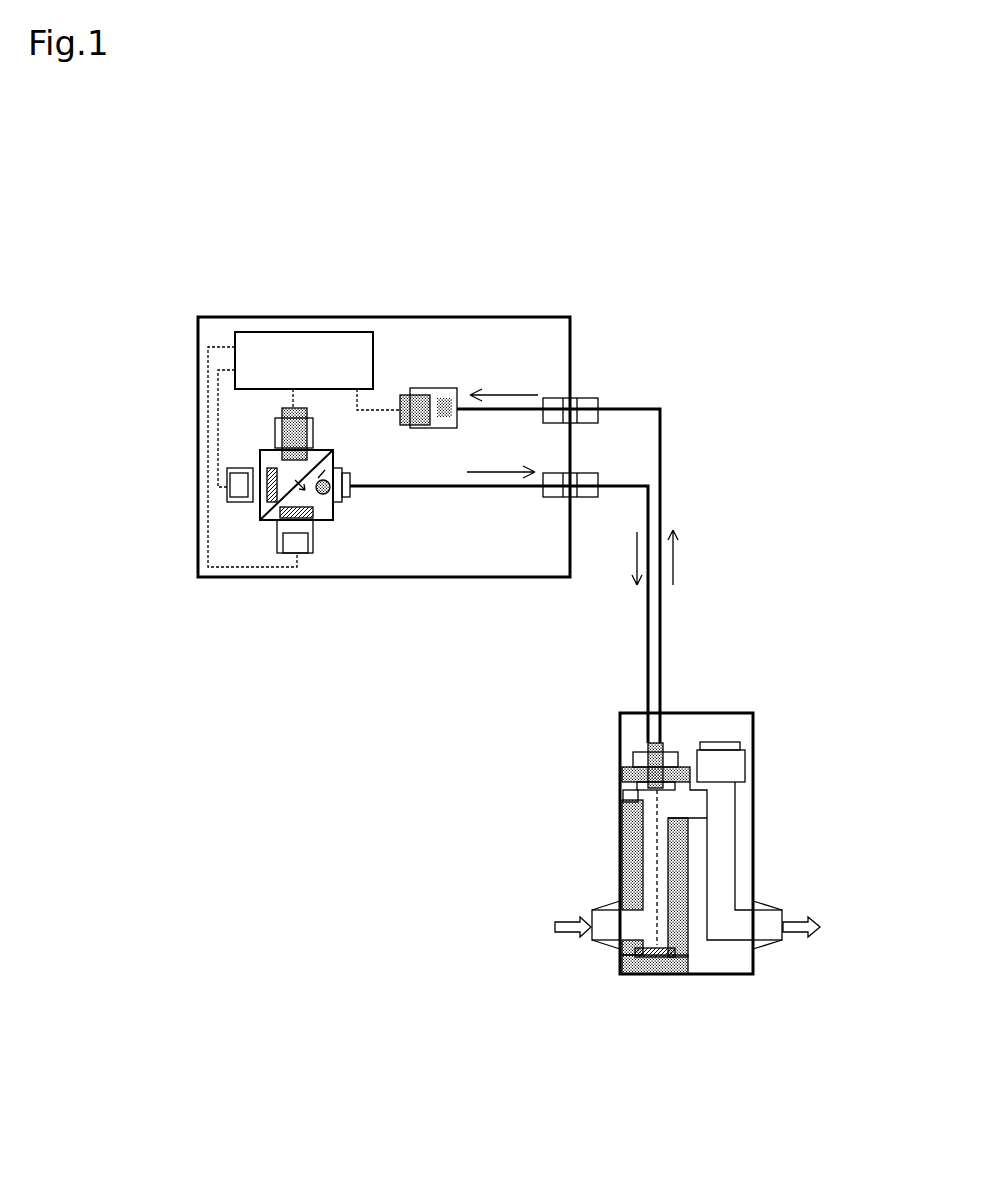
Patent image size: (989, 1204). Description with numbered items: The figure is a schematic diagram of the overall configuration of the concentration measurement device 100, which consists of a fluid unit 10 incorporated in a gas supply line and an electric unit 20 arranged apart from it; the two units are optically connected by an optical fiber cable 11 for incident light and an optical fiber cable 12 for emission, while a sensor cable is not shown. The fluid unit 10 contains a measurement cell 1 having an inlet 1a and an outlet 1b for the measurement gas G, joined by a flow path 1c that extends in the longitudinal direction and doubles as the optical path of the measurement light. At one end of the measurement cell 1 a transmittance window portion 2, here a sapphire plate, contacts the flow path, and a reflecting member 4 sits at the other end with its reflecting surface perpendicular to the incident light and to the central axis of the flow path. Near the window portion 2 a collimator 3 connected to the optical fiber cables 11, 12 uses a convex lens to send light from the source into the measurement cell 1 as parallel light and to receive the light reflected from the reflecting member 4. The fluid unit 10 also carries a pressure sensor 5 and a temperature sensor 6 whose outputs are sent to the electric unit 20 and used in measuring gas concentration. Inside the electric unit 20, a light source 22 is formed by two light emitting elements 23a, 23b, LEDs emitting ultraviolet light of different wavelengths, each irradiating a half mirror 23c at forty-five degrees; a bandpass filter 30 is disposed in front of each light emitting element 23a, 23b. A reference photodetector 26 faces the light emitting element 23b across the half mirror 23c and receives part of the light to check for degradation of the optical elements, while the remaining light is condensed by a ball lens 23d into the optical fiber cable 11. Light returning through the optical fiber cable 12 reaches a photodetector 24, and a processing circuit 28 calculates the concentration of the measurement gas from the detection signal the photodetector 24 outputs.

The concentration measurement device 100 is at (727, 345).
The electric unit 20 is at (510, 315).
The processing circuit 28 is at (310, 330).
The photodetector 24 is at (415, 388).
The light source 22 is at (243, 529).
The reference photodetector 26 is at (275, 433).
The bandpass filter 30 is at (230, 472).
The light emitting element 23a is at (300, 557).
The light emitting element 23b is at (227, 492).
The half mirror 23c is at (305, 520).
The ball lens 23d is at (338, 500).
The optical fiber cable for incident 11 is at (645, 628).
The optical fiber cable for emission 12 is at (665, 628).
The fluid unit 10 is at (755, 712).
The measurement cell 1 is at (655, 894).
The inlet 1a is at (640, 927).
The outlet 1b is at (673, 803).
The flow path 1c is at (623, 853).
The window portion 2 is at (635, 760).
The collimator 3 is at (652, 760).
The reflecting member 4 is at (660, 975).
The pressure sensor 5 is at (745, 762).
The temperature sensor 6 is at (623, 798).
The gas G is at (687, 914).